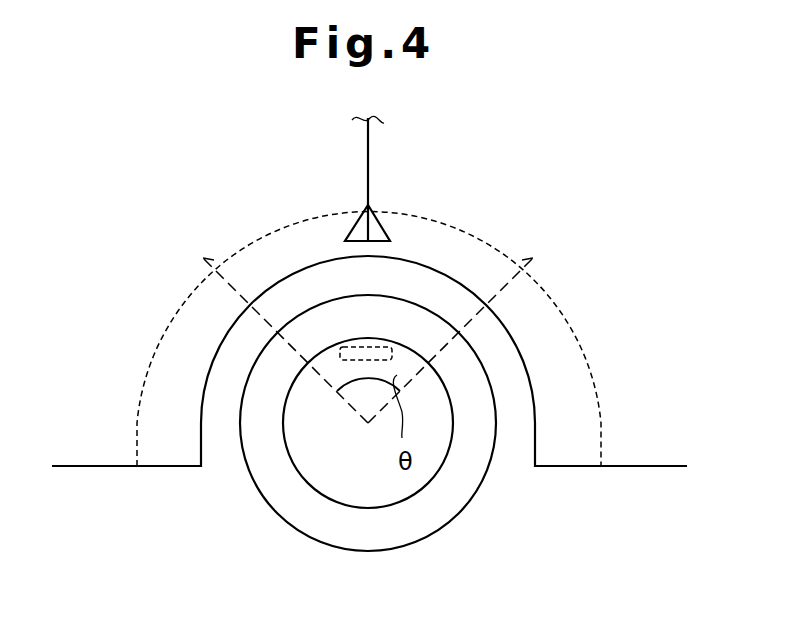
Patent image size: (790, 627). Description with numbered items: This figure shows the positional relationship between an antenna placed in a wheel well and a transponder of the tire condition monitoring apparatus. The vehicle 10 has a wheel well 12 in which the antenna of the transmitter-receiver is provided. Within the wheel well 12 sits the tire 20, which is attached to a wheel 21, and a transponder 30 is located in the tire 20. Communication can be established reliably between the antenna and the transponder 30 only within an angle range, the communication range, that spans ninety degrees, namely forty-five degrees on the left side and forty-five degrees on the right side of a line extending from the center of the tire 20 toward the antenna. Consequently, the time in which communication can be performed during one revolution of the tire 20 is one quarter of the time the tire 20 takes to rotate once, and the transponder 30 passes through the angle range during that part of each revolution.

The vehicle 10 is at (103, 466).
The wheel well 12 is at (517, 242).
The tire 20 is at (365, 547).
The wheel 21 is at (290, 448).
The transponder 30 is at (336, 347).